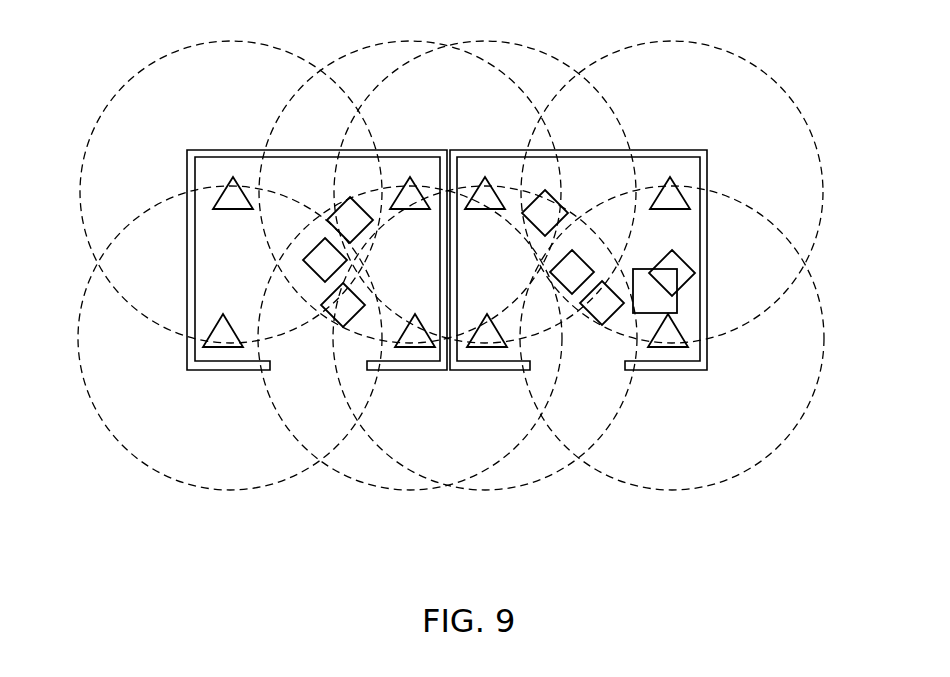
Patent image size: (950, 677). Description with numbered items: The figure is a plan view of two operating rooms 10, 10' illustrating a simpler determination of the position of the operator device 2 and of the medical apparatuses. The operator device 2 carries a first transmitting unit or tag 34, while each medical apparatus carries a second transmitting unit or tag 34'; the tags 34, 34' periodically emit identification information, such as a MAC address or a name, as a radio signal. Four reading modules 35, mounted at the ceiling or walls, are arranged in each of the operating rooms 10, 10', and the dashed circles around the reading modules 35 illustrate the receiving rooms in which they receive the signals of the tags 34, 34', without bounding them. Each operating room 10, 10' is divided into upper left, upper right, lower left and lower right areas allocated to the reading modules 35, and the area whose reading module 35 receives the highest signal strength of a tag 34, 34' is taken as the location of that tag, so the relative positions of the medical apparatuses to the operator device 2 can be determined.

The operator device 2 is at (677, 300).
The operating room 10 is at (295, 287).
The operating room 10' is at (592, 305).
The tag 34 is at (760, 265).
The tag 34' is at (340, 268).
The reading module 35 is at (233, 177).